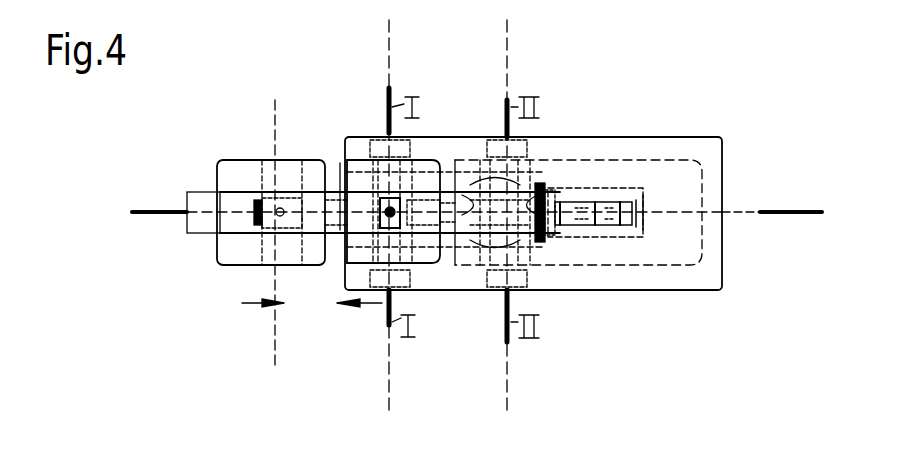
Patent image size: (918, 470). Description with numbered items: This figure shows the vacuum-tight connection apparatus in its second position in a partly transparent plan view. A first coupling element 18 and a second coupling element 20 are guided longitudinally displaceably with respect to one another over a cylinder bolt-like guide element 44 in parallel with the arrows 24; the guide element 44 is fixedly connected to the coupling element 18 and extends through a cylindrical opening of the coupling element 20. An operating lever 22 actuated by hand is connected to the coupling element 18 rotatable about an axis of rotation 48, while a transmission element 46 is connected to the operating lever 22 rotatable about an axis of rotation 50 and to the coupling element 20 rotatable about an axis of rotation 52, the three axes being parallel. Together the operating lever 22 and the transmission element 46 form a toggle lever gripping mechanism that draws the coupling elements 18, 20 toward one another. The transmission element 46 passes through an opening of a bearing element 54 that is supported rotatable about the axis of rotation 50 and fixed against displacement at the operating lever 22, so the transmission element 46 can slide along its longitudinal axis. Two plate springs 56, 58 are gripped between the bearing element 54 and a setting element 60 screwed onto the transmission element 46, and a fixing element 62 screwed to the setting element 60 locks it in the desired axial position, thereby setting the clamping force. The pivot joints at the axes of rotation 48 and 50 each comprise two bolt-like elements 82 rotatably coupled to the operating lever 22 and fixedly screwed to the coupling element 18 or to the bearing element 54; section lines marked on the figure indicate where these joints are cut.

The first coupling element 18 is at (355, 175).
The second coupling element 20 is at (238, 175).
The operating lever 22 is at (698, 150).
The arrows 24 is at (252, 303).
The guide element 44 is at (205, 200).
The transmission element 46 is at (337, 200).
The axis of rotation 48 is at (392, 29).
The axis of rotation 50 is at (509, 33).
The axis of rotation 52 is at (277, 110).
The bearing element 54 is at (550, 170).
The spring element 56 is at (540, 245).
The spring element 58 is at (548, 243).
The setting element 60 is at (598, 235).
The fixing element 62 is at (605, 200).
The bolt-like elements 82 is at (497, 153).